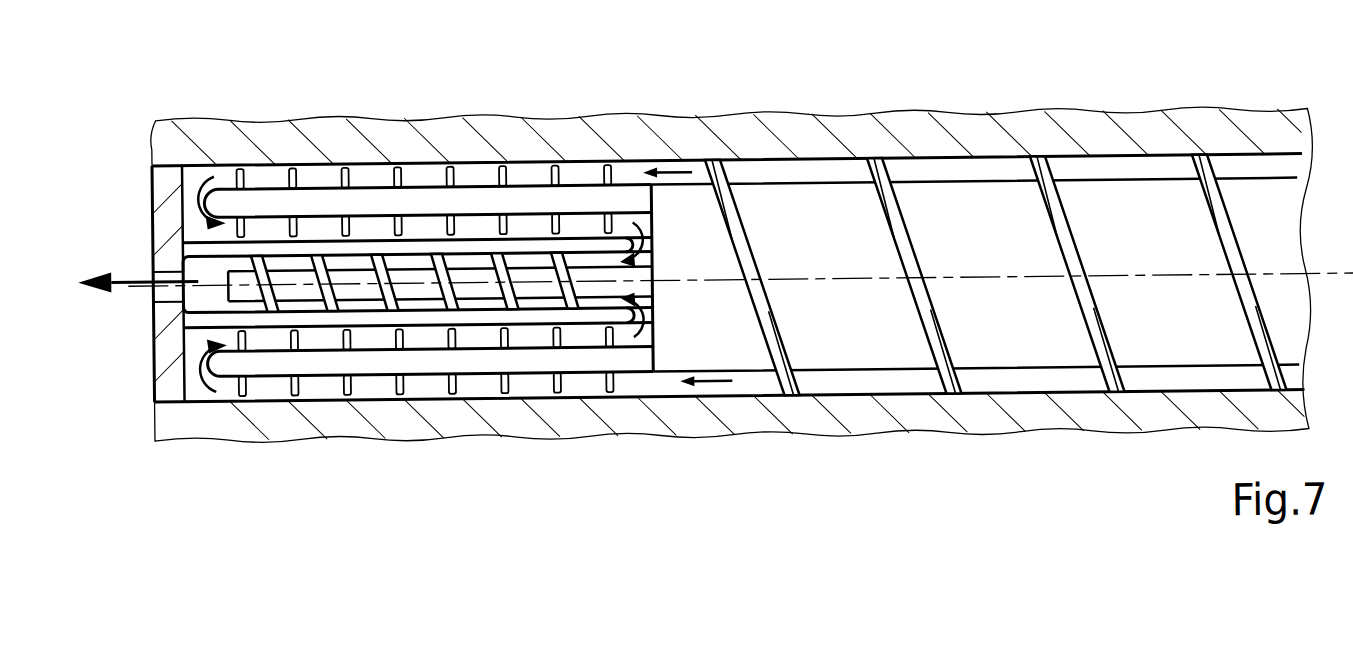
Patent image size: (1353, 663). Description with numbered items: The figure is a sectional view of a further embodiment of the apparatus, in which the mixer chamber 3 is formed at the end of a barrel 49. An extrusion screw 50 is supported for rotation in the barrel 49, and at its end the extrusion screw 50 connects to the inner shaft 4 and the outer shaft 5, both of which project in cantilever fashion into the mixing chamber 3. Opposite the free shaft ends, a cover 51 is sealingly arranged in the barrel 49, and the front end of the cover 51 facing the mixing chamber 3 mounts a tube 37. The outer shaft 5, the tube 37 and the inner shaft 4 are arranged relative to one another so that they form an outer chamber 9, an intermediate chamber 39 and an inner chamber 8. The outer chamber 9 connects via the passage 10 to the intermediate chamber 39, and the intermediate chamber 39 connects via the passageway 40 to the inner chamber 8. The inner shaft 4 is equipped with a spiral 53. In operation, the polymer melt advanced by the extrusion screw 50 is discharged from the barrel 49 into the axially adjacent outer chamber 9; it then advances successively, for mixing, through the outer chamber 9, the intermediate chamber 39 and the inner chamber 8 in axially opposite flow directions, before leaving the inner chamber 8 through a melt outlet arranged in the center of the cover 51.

The mixer chamber 3 is at (194, 390).
The inner shaft 4 is at (402, 293).
The outer shaft 5 is at (483, 367).
The inner chamber 8 is at (531, 262).
The outer chamber 9 is at (370, 177).
The passage 10 is at (196, 208).
The tube 37 is at (214, 248).
The intermediate chamber 39 is at (422, 226).
The passageway 40 is at (636, 342).
The barrel 49 is at (716, 426).
The extrusion screw 50 is at (878, 343).
The cover 51 is at (163, 335).
The spiral 53 is at (330, 305).